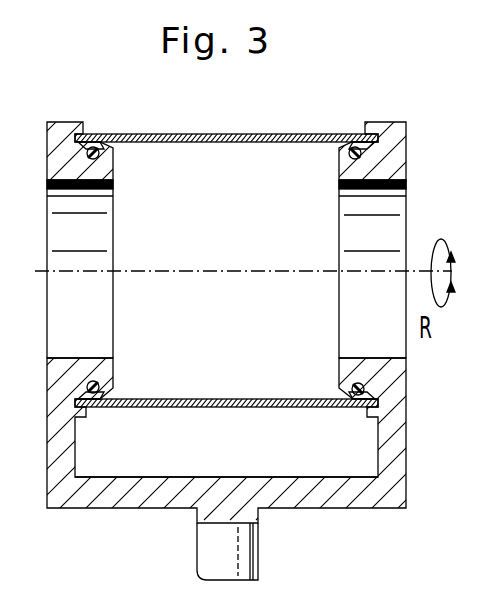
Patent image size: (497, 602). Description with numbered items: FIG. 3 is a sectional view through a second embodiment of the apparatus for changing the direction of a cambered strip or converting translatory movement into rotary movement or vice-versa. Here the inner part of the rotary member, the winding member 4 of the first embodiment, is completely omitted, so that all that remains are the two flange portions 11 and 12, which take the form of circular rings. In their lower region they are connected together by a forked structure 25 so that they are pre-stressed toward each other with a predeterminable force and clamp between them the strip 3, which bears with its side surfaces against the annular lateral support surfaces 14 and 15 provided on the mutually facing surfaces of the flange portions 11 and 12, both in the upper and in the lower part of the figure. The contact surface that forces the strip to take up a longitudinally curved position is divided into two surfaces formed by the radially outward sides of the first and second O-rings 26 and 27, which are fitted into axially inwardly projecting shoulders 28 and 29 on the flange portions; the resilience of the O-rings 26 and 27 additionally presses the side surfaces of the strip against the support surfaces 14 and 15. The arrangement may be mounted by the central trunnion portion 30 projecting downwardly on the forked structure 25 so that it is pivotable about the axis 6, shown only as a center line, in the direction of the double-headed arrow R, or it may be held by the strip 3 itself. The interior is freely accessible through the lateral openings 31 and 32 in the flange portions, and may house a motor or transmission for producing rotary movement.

The strip 3 is at (228, 108).
The winding member 4 is at (395, 430).
The axis 6 is at (417, 265).
The flange portion 11 is at (388, 132).
The flange portion 12 is at (63, 128).
The annular lateral support surface 14 is at (367, 130).
The annular lateral support surface 15 is at (85, 132).
The forked structure 25 is at (292, 490).
The first O-ring 26 is at (347, 148).
The second O-ring 27 is at (103, 147).
The axially inwardly projecting shoulder 28 is at (342, 178).
The axially inwardly projecting shoulder 29 is at (113, 178).
The central trunnion portion 30 is at (242, 543).
The lateral opening 31 is at (347, 302).
The lateral opening 32 is at (113, 300).